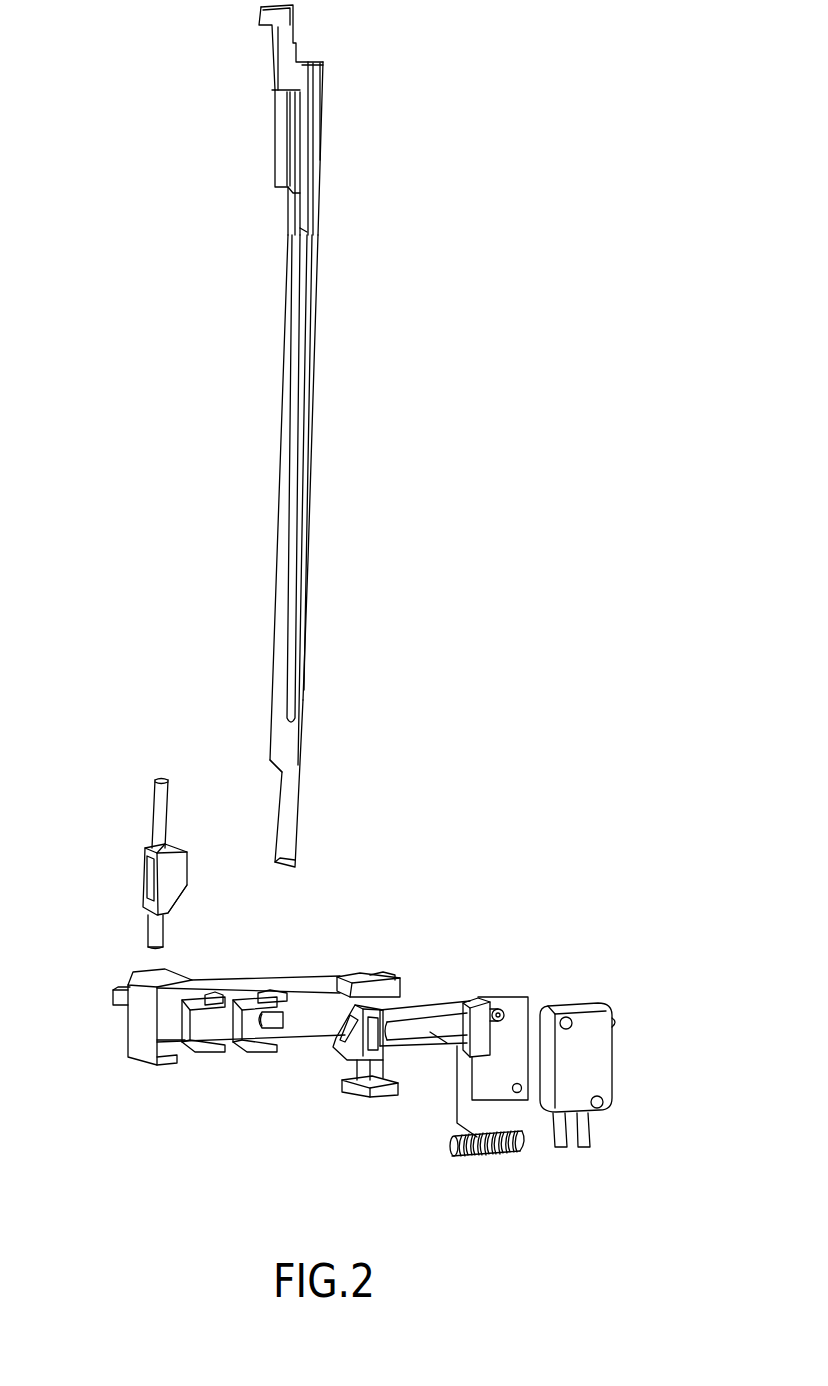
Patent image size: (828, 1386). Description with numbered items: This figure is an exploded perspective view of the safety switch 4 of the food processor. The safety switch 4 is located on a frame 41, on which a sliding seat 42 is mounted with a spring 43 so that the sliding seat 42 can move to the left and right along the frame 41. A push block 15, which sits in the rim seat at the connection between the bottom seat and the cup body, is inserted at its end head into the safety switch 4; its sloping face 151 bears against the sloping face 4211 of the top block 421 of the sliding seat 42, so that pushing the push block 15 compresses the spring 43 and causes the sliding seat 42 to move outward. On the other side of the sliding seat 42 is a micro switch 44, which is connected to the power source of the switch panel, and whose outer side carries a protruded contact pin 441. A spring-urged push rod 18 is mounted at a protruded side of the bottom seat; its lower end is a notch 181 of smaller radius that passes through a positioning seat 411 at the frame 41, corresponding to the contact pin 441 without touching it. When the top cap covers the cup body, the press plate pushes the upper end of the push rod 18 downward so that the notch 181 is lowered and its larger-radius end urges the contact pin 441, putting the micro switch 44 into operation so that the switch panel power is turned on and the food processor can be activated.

The push rod 18 is at (342, 402).
The notch 181 is at (278, 803).
The push block 15 is at (142, 833).
The sloping face 151 is at (180, 898).
The safety switch 4 is at (408, 1067).
The frame 41 is at (229, 1017).
The positioning seat 411 is at (403, 980).
The sloping face 4211 is at (325, 1032).
The sliding seat 42 is at (405, 1072).
The top block 421 is at (343, 1073).
The spring 43 is at (483, 1160).
The micro switch 44 is at (600, 1068).
The contact pin 441 is at (616, 1023).